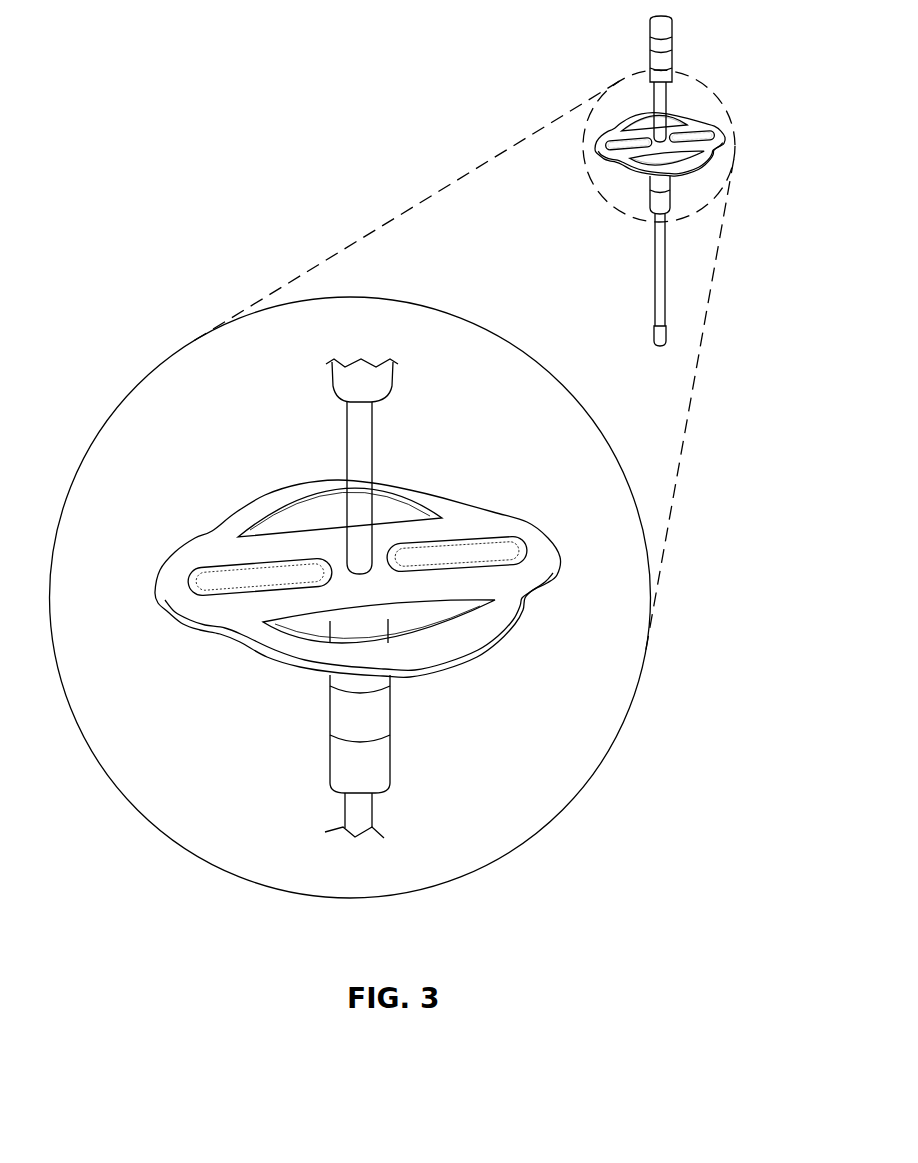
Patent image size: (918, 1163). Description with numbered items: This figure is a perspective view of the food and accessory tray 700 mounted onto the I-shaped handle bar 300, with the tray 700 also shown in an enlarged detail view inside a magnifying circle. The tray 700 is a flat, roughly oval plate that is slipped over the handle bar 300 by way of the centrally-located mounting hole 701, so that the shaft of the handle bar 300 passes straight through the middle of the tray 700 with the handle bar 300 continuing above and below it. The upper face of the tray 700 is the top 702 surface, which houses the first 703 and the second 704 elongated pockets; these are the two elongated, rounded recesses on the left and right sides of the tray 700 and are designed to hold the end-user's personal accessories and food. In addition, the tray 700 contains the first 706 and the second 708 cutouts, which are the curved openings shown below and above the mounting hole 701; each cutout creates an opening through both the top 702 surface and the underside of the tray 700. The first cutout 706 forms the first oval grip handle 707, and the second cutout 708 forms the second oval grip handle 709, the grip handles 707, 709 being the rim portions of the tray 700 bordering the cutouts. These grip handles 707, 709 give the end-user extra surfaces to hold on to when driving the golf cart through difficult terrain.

The shaft / guidewire 300 is at (327, 765).
The food and accessory tray 700 is at (152, 588).
The centrally-located mounting hole 701 is at (358, 573).
The top surface 702 is at (490, 525).
The first elongated pocket 703 is at (217, 587).
The second elongated pocket 704 is at (481, 556).
The first cutout 706 is at (445, 622).
The first oval grip handle 707 is at (413, 653).
The second cutout 708 is at (303, 520).
The second oval grip handle 709 is at (407, 495).